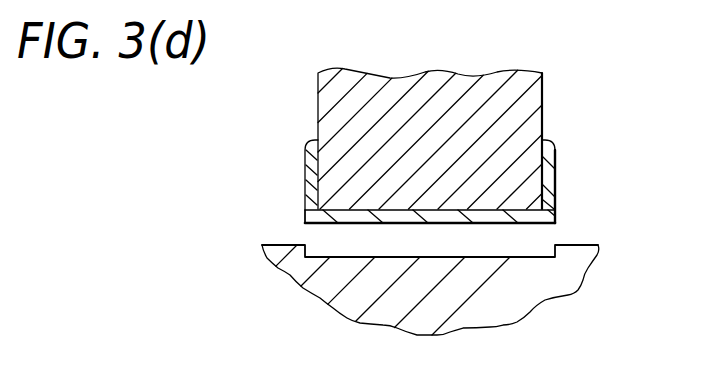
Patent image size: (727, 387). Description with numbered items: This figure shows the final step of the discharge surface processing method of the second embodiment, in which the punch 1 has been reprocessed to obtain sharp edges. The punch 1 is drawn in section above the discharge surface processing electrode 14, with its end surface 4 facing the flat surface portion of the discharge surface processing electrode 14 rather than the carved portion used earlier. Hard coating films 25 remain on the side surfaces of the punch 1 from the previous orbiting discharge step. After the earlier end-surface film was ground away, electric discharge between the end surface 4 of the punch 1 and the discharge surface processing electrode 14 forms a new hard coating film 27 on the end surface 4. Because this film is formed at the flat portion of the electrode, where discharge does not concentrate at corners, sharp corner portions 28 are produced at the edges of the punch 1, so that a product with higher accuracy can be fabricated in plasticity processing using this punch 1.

The punch 1 is at (543, 82).
The end surface 4 is at (363, 208).
The discharge surface processing electrode 14 is at (592, 244).
The hard coating films 25 is at (307, 158).
The hard coating film 27 is at (490, 221).
The sharp corner portions 28 is at (313, 218).